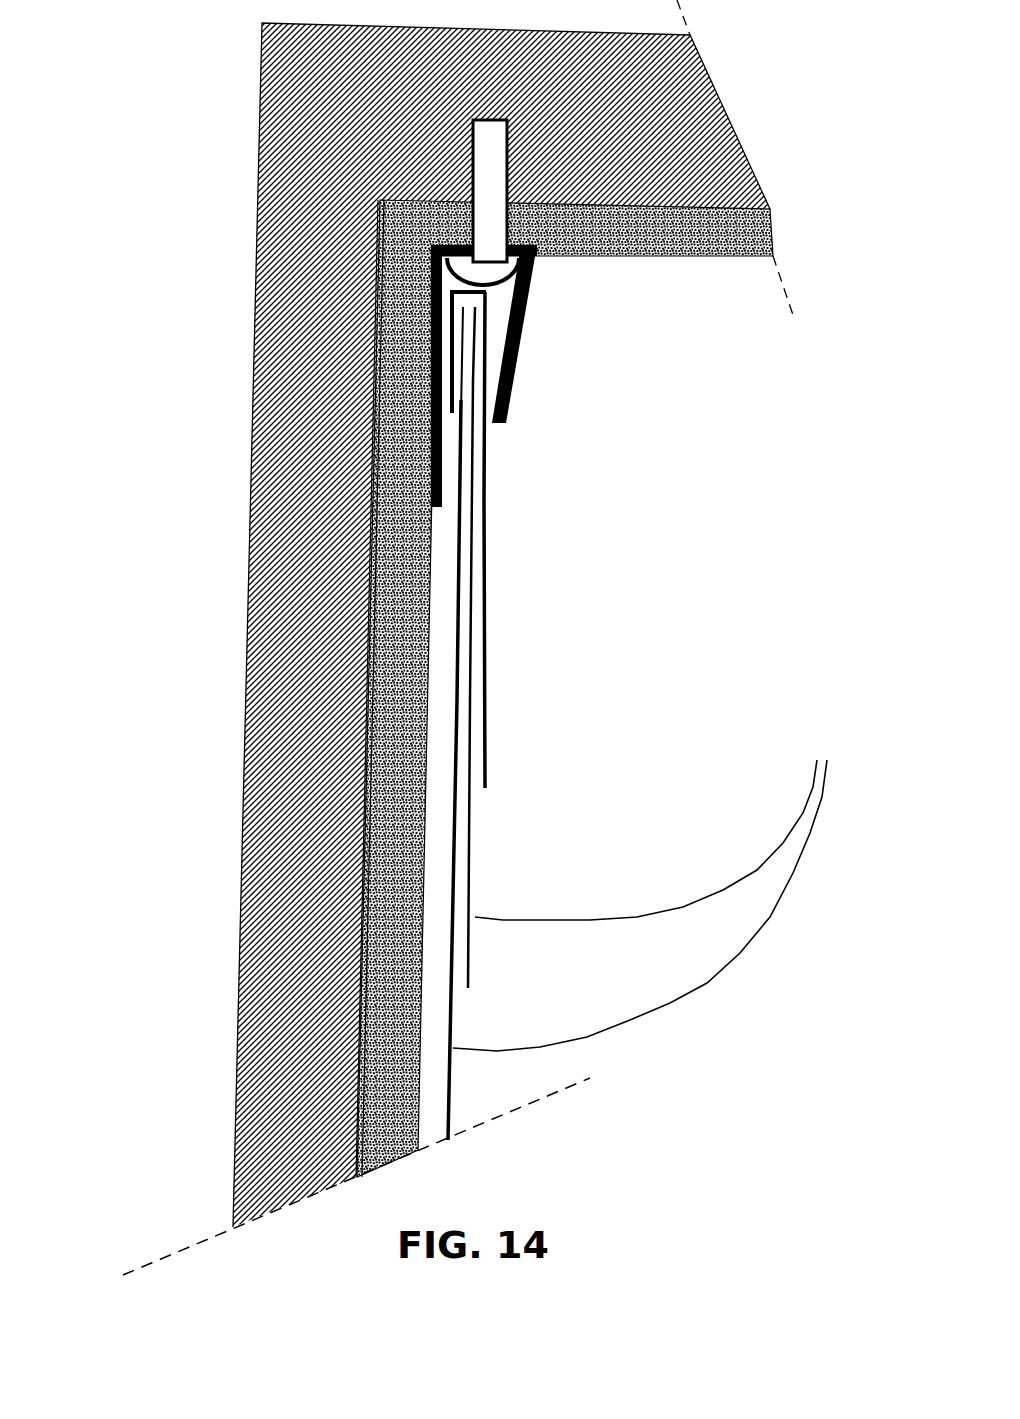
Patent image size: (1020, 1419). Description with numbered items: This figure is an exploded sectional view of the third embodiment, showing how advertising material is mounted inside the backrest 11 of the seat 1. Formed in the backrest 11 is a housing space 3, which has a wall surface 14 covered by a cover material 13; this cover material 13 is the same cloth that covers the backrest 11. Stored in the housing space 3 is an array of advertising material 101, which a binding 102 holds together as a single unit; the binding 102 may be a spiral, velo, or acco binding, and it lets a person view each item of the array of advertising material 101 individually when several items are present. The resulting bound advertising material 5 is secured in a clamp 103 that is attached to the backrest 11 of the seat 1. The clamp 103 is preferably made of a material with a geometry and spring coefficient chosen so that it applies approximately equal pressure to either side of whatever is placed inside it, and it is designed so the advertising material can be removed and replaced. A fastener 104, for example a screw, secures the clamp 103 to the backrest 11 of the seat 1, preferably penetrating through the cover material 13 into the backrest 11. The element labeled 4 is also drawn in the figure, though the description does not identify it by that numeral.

The seat 1 is at (230, 147).
The backrest 11 is at (312, 288).
The cover material 13 is at (372, 388).
The wall surface 14 is at (385, 488).
The housing space 3 is at (597, 573).
The panel 4 is at (622, 643).
The bound advertising material 5 is at (655, 657).
The array of advertising material 101 is at (493, 772).
The binding 102 is at (483, 295).
The clamp 103 is at (447, 470).
The fastener 104 is at (487, 163).